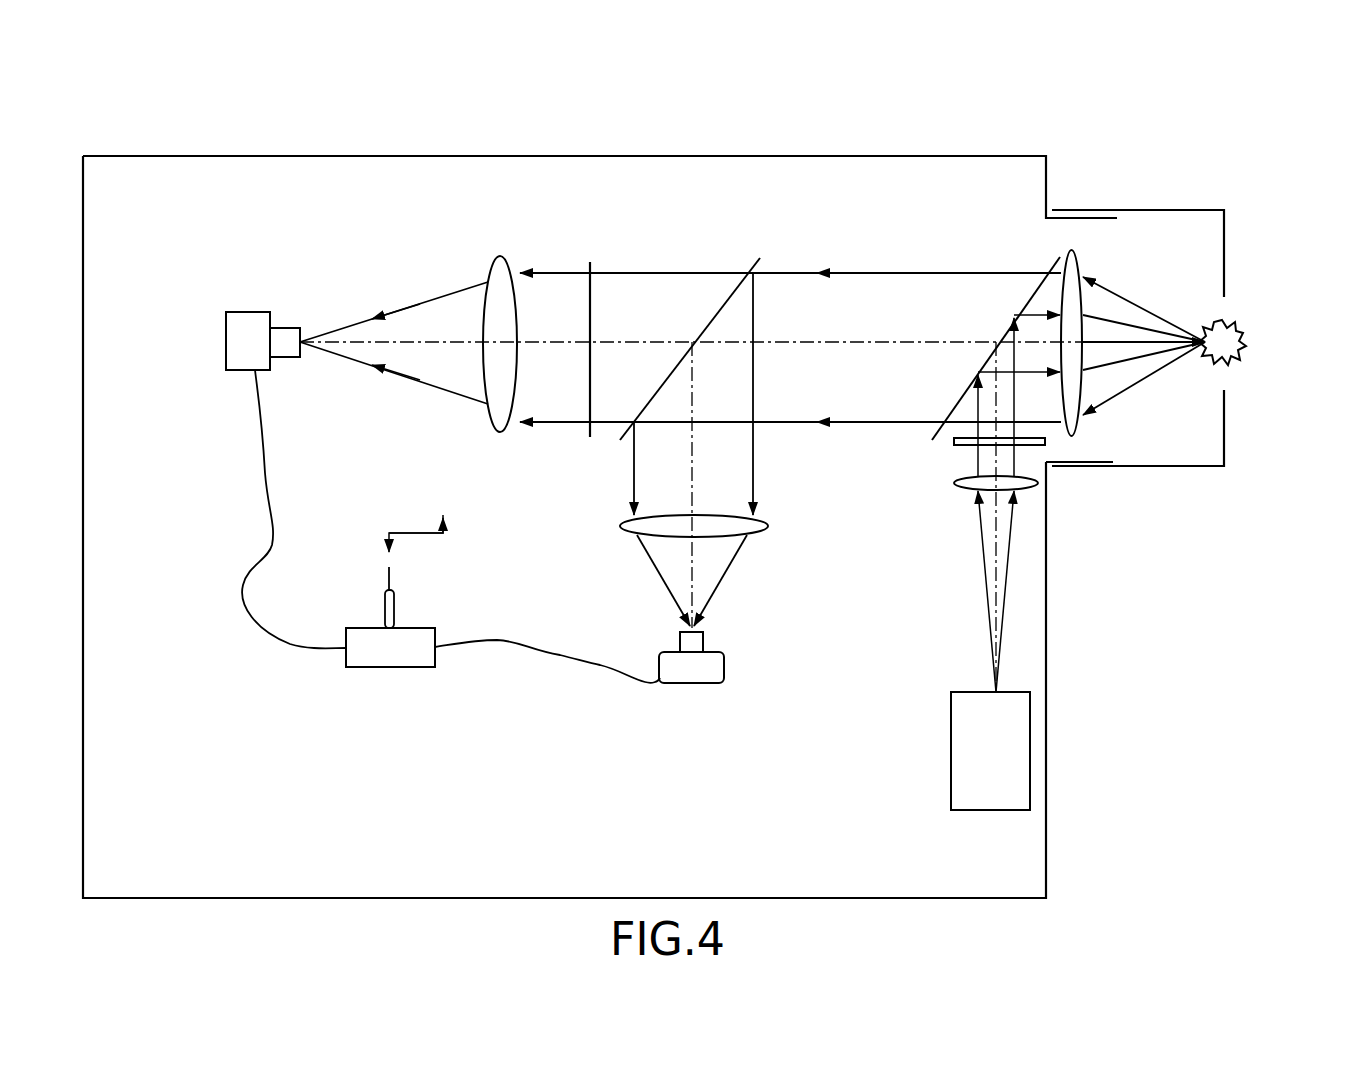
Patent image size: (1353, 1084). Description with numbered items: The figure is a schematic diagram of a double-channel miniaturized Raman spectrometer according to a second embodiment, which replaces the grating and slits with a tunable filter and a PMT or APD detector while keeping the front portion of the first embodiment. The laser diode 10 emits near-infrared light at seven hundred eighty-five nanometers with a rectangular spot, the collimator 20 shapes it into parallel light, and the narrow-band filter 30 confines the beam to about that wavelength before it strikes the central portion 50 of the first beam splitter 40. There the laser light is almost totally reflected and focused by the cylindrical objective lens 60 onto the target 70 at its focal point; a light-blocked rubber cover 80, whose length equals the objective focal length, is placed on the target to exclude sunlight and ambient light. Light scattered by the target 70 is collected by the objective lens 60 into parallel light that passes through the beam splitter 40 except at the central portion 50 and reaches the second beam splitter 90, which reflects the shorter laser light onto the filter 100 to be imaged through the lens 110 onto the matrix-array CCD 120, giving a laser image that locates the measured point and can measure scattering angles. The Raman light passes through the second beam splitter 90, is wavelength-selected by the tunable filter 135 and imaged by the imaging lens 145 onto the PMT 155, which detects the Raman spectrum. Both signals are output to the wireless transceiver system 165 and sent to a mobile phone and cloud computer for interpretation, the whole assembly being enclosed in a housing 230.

The laser diode 10 is at (1015, 757).
The collimator 20 is at (1040, 493).
The narrow-band filter 30 is at (1030, 445).
The first beam splitter 40 is at (1050, 252).
The central portion 50 is at (1000, 340).
The cylindrical objective lens 60 is at (1093, 248).
The target 70 is at (1247, 360).
The light-blocked rubber cover 80 is at (1232, 248).
The second beam splitter 90 is at (753, 257).
The filter 100 is at (783, 467).
The lens 110 is at (773, 548).
The matrix-array CCD 120 is at (722, 690).
The tunable filter 135 is at (585, 257).
The imaging lens 145 is at (492, 262).
The PMT 155 is at (265, 312).
The wireless transceiver system 165 is at (389, 684).
The housing 230 is at (1047, 822).